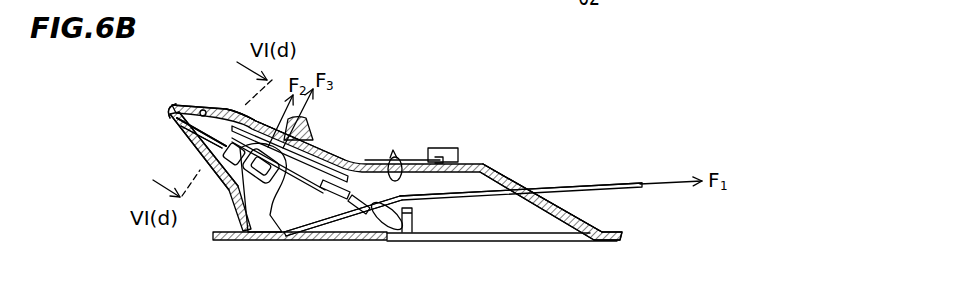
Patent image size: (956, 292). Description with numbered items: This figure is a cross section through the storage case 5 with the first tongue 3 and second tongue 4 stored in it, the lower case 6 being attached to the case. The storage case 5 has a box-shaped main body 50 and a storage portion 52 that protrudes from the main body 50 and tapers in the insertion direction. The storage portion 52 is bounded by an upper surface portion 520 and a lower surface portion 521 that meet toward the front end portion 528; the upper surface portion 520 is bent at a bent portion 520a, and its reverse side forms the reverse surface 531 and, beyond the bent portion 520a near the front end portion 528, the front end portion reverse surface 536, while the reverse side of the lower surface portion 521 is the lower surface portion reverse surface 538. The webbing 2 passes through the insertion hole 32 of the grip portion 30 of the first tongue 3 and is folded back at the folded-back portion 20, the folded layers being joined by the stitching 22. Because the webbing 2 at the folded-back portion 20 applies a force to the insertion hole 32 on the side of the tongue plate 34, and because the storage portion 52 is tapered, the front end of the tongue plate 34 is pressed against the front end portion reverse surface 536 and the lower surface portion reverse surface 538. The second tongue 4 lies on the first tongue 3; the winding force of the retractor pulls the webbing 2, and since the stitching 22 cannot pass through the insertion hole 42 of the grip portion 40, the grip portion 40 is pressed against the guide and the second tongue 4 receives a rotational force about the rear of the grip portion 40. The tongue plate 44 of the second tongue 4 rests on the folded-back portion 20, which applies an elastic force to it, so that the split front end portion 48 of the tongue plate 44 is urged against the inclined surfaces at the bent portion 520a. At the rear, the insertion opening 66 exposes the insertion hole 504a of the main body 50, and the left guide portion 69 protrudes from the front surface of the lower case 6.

The webbing 2 is at (562, 187).
The first tongue 3 is at (232, 158).
The second tongue 4 is at (318, 157).
The storage case 5 is at (538, 114).
The lower case 6 is at (620, 237).
The folded-back portion 20 is at (252, 190).
The stitching 22 is at (313, 226).
The grip portion 30 is at (243, 148).
The insertion hole 32 is at (244, 172).
The tongue plate 34 is at (180, 126).
The grip portion 40 is at (386, 222).
The insertion hole 42 is at (360, 209).
The tongue plate 44 is at (332, 172).
The front end portion 48 is at (226, 107).
The main body 50 is at (489, 156).
The storage portion 52 is at (170, 100).
The insertion opening 66 is at (562, 237).
The left guide portion 69 is at (412, 211).
The insertion hole 504a is at (566, 196).
The upper surface portion 520 is at (324, 166).
The bent portion 520a is at (230, 107).
The lower surface portion 521 is at (186, 141).
The front end portion 528 is at (173, 112).
The reverse surface 531 is at (403, 178).
The front end portion reverse surface 536 is at (197, 107).
The lower surface portion reverse surface 538 is at (213, 146).